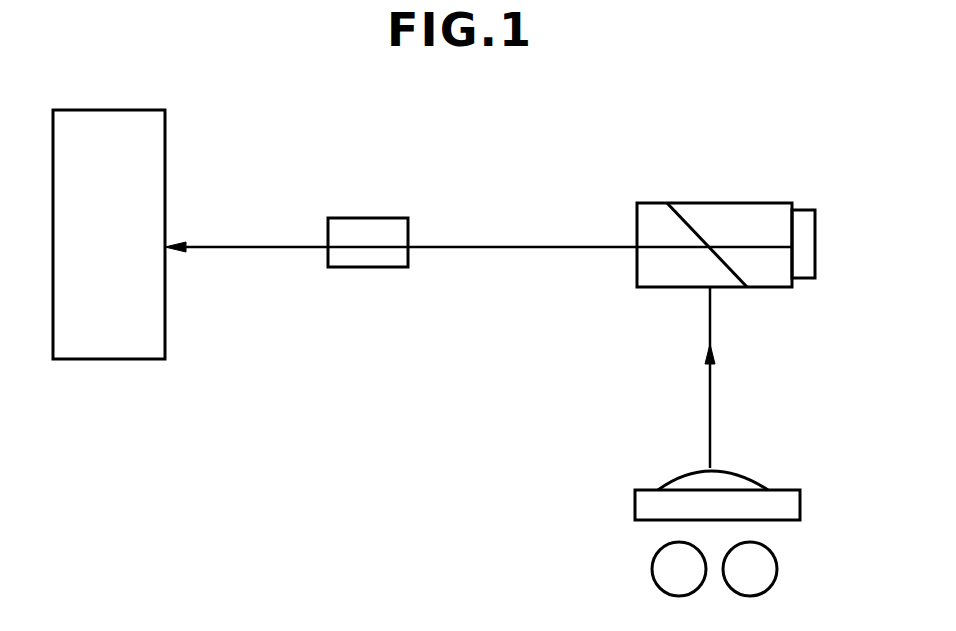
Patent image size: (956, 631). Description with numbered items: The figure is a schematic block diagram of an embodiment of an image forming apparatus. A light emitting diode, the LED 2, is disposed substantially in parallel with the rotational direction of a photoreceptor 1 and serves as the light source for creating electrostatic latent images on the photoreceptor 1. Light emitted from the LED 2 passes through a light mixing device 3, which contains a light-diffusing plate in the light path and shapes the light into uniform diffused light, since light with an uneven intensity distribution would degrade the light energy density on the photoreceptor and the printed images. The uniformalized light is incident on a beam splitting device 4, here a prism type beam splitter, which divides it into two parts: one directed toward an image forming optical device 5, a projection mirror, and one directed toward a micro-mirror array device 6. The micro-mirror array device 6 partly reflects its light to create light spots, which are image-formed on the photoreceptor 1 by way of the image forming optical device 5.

The photoreceptor 1 is at (95, 359).
The light emitting diode 2 is at (769, 580).
The light mixing device 3 is at (793, 505).
The beam splitting device 4 is at (726, 203).
The image forming optical device 5 is at (355, 267).
The micro-mirror array device 6 is at (815, 240).